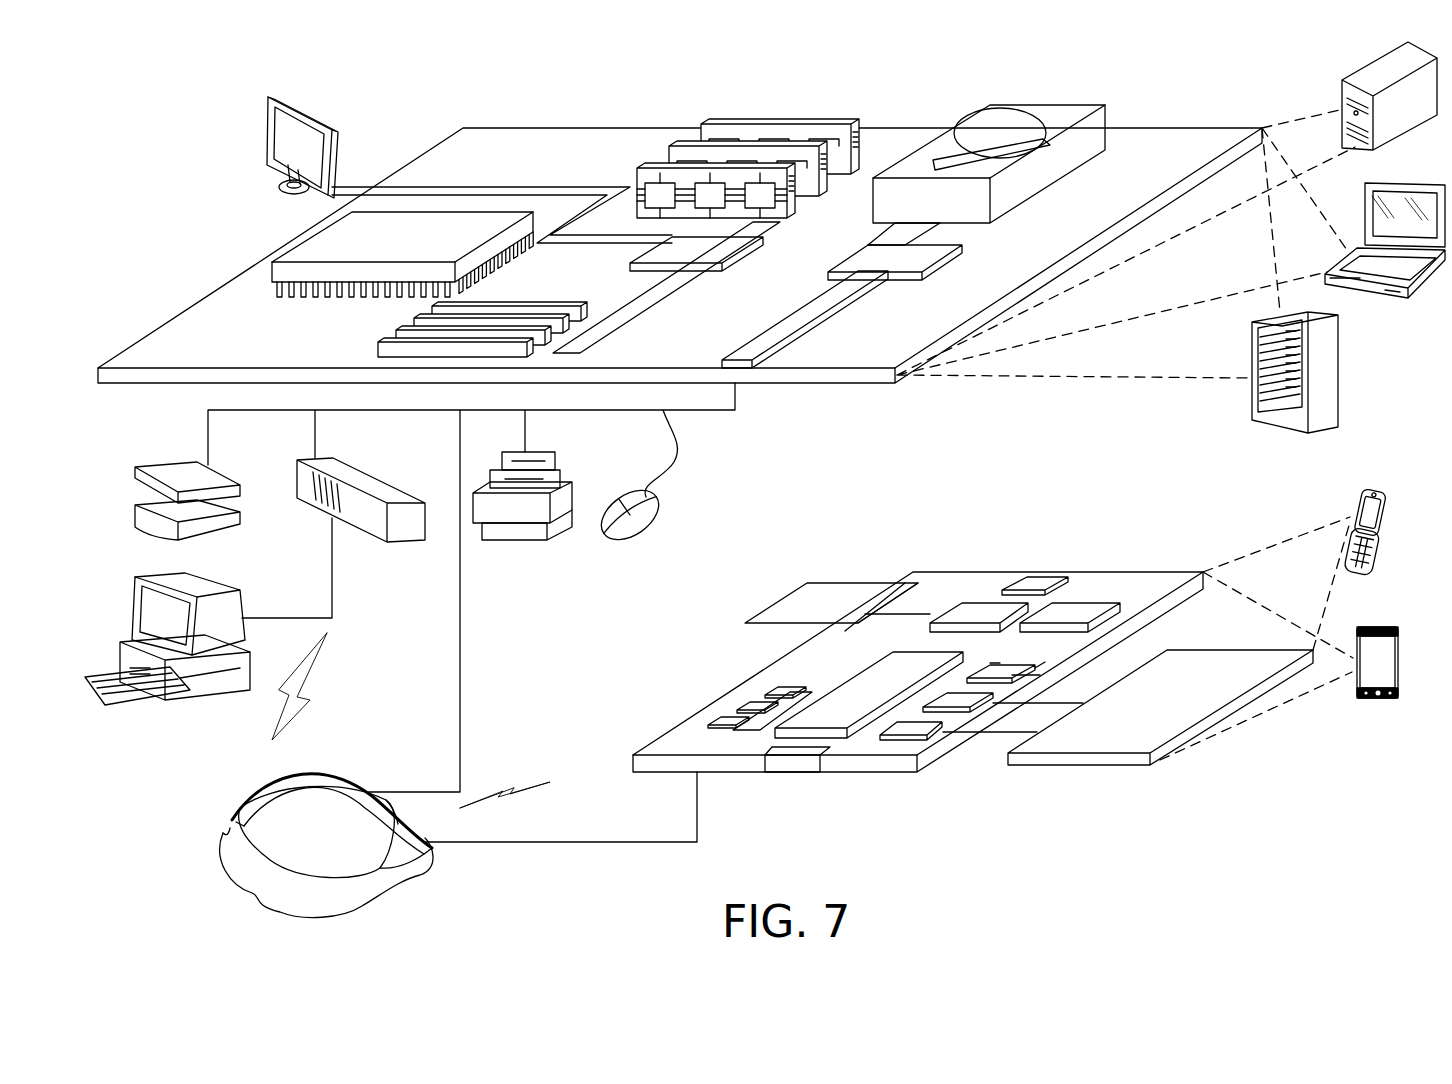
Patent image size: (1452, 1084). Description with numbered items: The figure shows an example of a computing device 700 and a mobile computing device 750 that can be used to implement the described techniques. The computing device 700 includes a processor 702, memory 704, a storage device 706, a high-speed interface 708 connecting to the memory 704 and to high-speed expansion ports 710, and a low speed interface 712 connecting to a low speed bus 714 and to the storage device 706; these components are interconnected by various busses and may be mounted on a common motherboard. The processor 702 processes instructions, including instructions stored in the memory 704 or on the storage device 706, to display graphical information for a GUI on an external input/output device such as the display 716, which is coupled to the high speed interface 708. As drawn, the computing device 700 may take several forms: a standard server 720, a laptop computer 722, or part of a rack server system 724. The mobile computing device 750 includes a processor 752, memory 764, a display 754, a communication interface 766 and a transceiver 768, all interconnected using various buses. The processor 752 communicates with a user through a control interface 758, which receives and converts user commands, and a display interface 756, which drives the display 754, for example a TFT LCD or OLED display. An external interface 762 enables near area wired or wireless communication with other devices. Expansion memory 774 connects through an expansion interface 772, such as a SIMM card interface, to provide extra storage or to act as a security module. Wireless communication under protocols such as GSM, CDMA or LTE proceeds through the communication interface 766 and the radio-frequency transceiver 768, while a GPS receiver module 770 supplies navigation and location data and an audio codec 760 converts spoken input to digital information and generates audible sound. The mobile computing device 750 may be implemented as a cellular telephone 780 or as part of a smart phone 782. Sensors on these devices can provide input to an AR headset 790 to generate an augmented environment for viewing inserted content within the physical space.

The computing device 700 is at (410, 79).
The processor 702 is at (299, 243).
The memory 704 is at (784, 123).
The storage device 706 is at (1033, 104).
The high-speed interface 708 is at (710, 253).
The high-speed expansion ports 710 is at (408, 332).
The low speed interface 712 is at (866, 252).
The low speed bus 714 is at (742, 356).
The display 716 is at (268, 96).
The standard server 720 is at (1365, 72).
The laptop computer 722 is at (1425, 182).
The rack server system 724 is at (1340, 373).
The mobile computing device 750 is at (1244, 760).
The processor 752 is at (835, 696).
The display 754 is at (1203, 668).
The display interface 756 is at (920, 727).
The control interface 758 is at (960, 700).
The audio codec 760 is at (1005, 665).
The external interface 762 is at (793, 757).
The memory 764 is at (736, 708).
The communication interface 766 is at (980, 608).
The transceiver 768 is at (1078, 608).
The GPS receiver module 770 is at (1038, 582).
The expansion interface 772 is at (897, 585).
The expansion memory 774 is at (807, 583).
The cellular telephone 780 is at (1358, 490).
The smart phone 782 is at (1368, 626).
The AR headset 790 is at (444, 876).